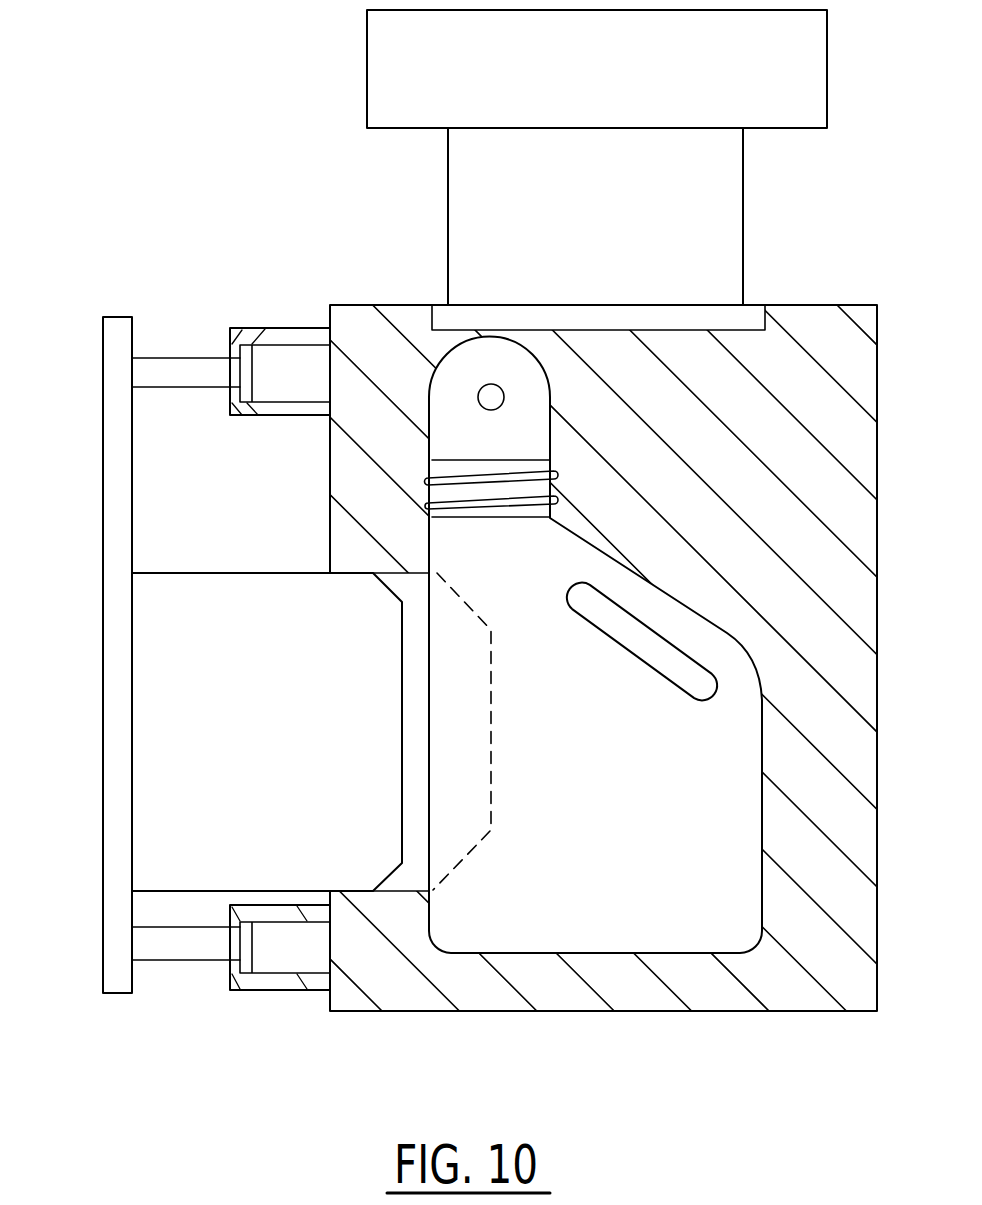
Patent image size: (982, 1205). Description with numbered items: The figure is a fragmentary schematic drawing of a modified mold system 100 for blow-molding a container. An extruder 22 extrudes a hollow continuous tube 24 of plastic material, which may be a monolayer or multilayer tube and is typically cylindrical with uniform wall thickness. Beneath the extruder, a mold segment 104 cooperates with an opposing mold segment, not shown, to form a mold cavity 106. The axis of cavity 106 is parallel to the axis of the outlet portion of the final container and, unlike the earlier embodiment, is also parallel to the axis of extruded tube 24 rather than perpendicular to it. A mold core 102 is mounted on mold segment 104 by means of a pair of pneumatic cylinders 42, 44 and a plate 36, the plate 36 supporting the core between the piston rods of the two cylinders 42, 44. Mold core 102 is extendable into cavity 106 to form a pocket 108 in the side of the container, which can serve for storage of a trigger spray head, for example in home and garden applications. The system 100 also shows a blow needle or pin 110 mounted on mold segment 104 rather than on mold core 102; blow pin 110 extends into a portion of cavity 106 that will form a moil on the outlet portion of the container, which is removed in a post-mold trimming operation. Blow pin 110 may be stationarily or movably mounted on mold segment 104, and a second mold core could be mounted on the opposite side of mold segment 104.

The extruder 22 is at (820, 68).
The hollow continuous tube 24 is at (735, 208).
The bridge plate 36 is at (115, 480).
The pneumatic cylinder 42 is at (265, 335).
The pneumatic cylinder 44 is at (280, 982).
The modified mold system 100 is at (94, 273).
The mold core 102 is at (138, 812).
The mold segment 104 is at (821, 317).
The mold cavity 106 is at (593, 669).
The pocket 108 is at (497, 755).
The blow needle or pin 110 is at (492, 392).